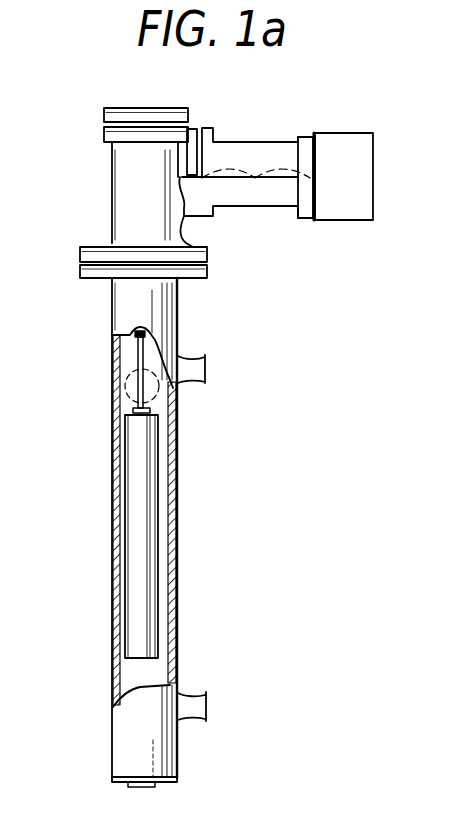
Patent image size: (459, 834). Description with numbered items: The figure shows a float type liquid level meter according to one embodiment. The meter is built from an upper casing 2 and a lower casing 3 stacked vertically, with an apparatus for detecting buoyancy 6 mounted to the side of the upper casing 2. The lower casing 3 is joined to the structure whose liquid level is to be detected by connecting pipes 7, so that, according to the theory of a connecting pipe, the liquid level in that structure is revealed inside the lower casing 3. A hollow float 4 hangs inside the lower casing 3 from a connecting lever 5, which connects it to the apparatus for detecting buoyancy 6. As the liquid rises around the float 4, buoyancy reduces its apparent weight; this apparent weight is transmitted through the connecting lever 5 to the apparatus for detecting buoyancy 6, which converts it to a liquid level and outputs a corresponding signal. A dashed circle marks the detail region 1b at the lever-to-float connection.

The casing 2 is at (117, 212).
The lower casing 3 is at (177, 315).
The float 4 is at (130, 555).
The connecting lever 5 is at (140, 365).
The apparatus for detecting buoyancy 6 is at (360, 140).
The connecting pipes 7 is at (198, 368).
The detail region 1b is at (182, 408).